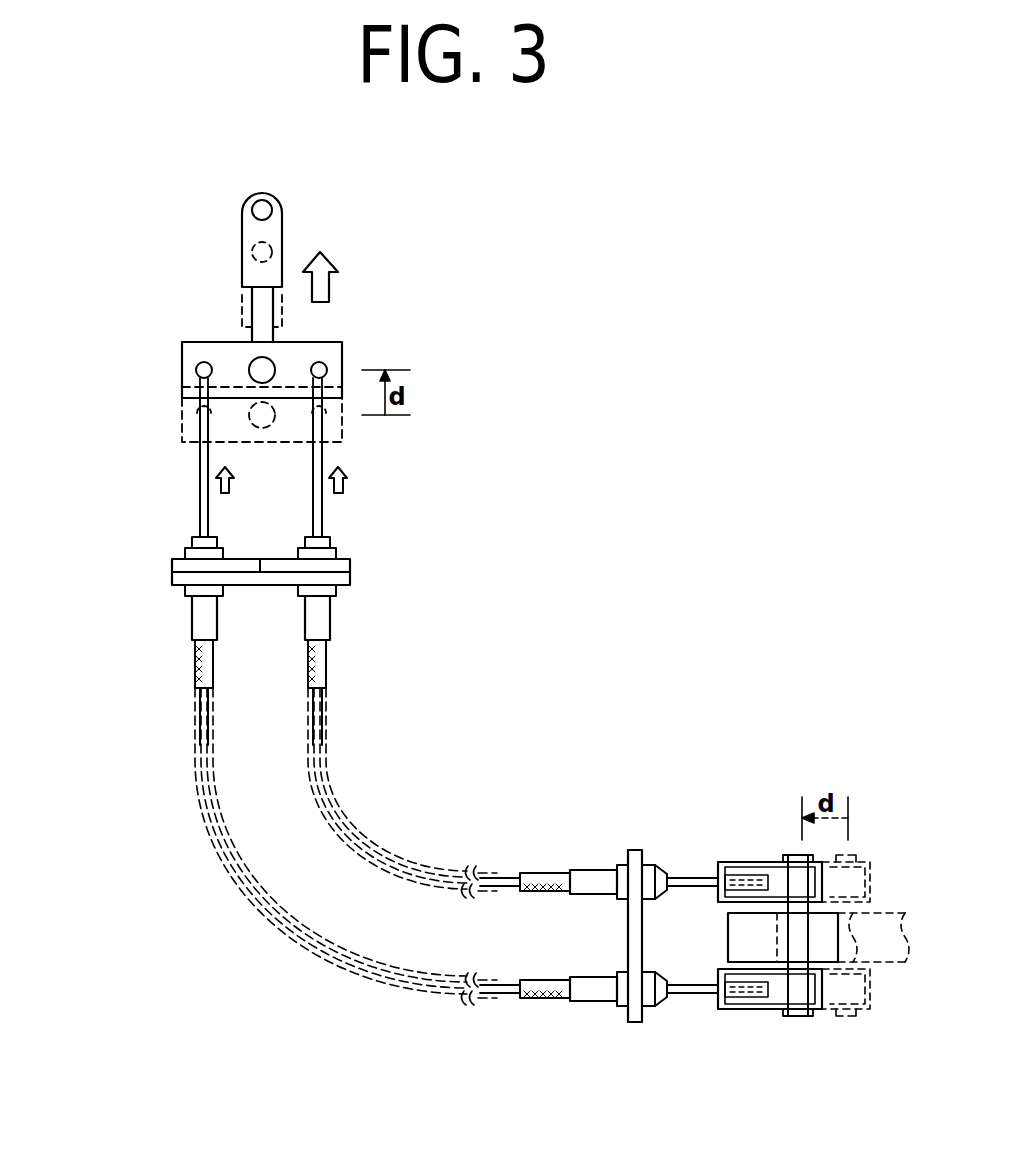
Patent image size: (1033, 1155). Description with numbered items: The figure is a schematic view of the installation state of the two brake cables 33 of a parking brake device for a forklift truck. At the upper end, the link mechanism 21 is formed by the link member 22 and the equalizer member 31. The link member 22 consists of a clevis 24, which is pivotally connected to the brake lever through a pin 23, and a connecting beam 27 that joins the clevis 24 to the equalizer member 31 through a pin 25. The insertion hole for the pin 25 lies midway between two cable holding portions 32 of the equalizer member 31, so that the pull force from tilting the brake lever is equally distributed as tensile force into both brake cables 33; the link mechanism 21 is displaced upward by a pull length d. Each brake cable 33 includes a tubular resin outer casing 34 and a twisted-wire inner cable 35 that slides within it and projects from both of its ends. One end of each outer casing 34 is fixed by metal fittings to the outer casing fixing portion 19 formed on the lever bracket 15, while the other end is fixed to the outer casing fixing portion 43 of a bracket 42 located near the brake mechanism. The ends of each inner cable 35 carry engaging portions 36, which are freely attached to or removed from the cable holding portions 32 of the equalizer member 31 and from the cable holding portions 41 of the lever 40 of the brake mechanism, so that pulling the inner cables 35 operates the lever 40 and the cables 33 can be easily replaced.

The lever bracket 15 is at (352, 578).
The outer casing fixing portion 19 is at (180, 587).
The link mechanism 21 is at (84, 250).
The link member 22 is at (139, 202).
The pin 23 is at (272, 210).
The clevis 24 is at (250, 209).
The pin 25 is at (267, 365).
The connecting beam 27 is at (252, 306).
The equalizer member 31 is at (182, 352).
The cable holding portion 32 is at (198, 366).
The brake cable 33 is at (330, 652).
The outer casing 34 is at (195, 665).
The inner cable 35 is at (200, 490).
The engaging portion 36 is at (200, 374).
The lever 40 is at (728, 938).
The cable holding portion 41 is at (745, 862).
The bracket 42 is at (636, 850).
The outer casing fixing portion 43 is at (628, 940).